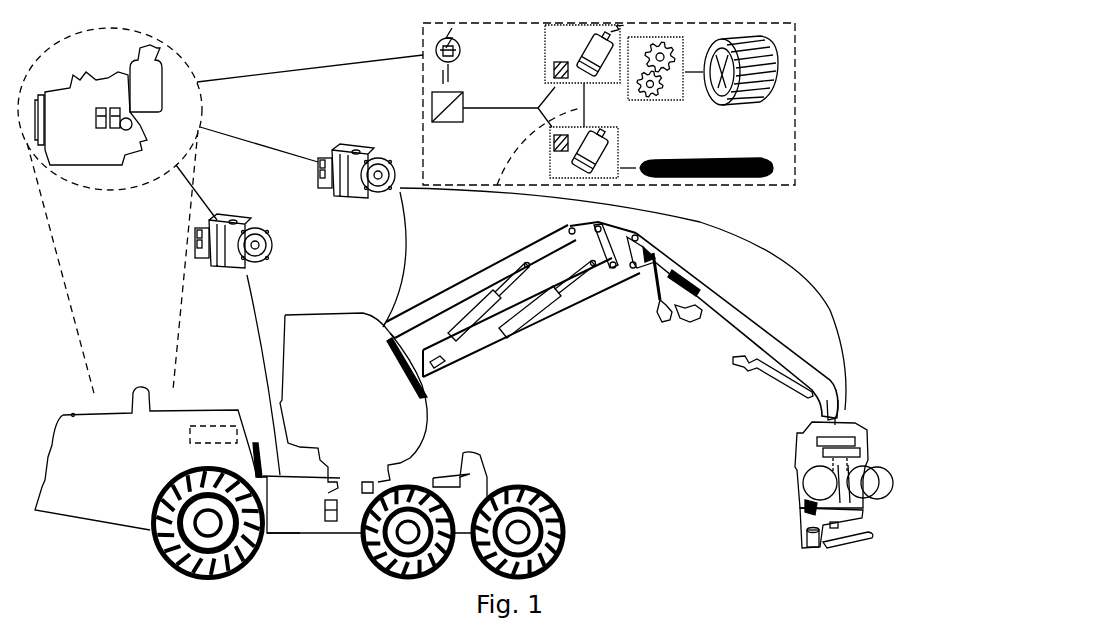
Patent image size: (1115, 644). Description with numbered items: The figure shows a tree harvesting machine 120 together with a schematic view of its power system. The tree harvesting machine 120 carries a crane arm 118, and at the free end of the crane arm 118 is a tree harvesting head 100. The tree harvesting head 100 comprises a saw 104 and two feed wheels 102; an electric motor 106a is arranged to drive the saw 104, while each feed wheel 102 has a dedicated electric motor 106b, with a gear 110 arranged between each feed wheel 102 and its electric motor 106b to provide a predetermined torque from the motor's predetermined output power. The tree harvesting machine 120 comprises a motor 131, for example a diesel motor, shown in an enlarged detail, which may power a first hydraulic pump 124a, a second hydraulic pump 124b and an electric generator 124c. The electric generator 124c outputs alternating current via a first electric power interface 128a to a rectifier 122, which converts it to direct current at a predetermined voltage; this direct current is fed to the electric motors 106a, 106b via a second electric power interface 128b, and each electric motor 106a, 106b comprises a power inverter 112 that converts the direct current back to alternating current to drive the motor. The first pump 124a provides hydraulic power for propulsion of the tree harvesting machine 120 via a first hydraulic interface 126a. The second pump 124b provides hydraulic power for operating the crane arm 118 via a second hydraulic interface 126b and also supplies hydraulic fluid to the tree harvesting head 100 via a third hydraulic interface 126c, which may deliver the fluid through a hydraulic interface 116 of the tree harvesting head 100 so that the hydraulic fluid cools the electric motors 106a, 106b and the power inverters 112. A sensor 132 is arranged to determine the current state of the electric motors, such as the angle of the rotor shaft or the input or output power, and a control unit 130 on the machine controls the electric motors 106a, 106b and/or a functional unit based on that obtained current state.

The tree harvesting head 100 is at (855, 410).
The feed wheels 102 is at (777, 58).
The saw 104 is at (762, 178).
The electric motor 106a is at (810, 523).
The electric motor 106b is at (580, 37).
The gear 110 is at (660, 92).
The power inverter 112 is at (552, 65).
The hydraulic interface 116 is at (813, 415).
The crane arm 118 is at (728, 308).
The tree harvesting machine 120 is at (338, 283).
The rectifier 122 is at (430, 105).
The first hydraulic pump 124a is at (218, 215).
The second hydraulic pump 124b is at (340, 140).
The electric generator 124c is at (432, 30).
The first hydraulic interface 126a is at (255, 297).
The second hydraulic interface 126b is at (407, 243).
The third hydraulic interface 126c is at (584, 108).
The first electric power interface 128a is at (443, 80).
The second electric power interface 128b is at (522, 108).
The control unit 130 is at (211, 426).
The motor 131 is at (178, 48).
The sensor 132 is at (863, 463).